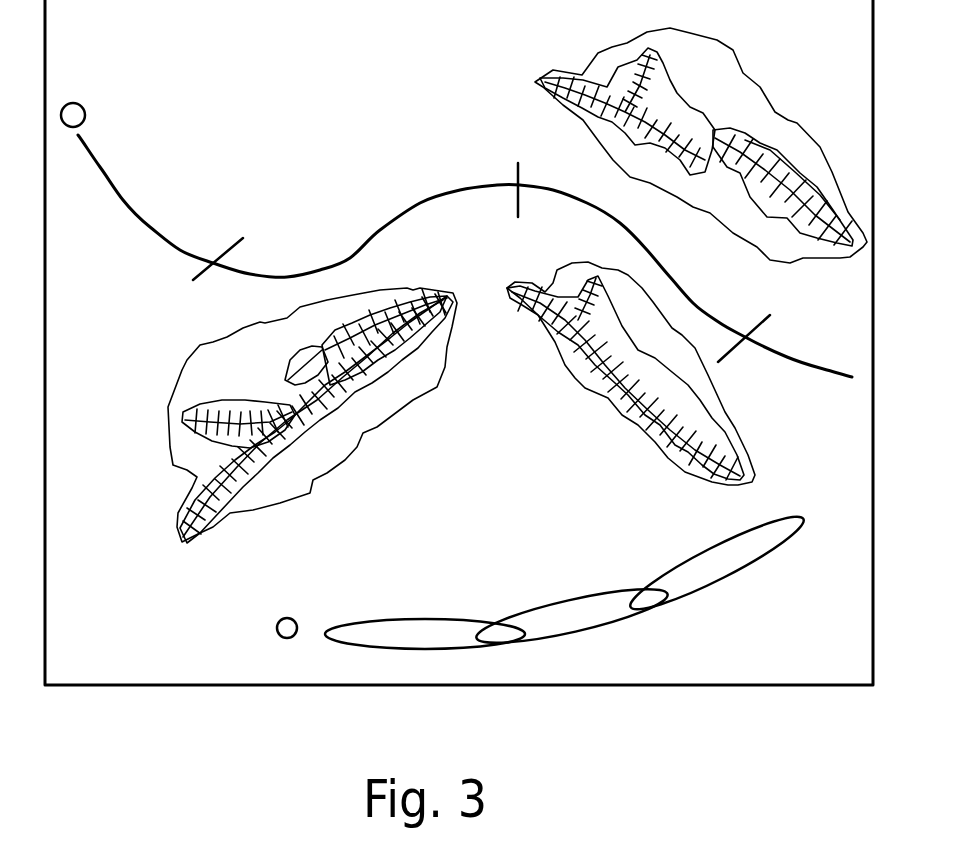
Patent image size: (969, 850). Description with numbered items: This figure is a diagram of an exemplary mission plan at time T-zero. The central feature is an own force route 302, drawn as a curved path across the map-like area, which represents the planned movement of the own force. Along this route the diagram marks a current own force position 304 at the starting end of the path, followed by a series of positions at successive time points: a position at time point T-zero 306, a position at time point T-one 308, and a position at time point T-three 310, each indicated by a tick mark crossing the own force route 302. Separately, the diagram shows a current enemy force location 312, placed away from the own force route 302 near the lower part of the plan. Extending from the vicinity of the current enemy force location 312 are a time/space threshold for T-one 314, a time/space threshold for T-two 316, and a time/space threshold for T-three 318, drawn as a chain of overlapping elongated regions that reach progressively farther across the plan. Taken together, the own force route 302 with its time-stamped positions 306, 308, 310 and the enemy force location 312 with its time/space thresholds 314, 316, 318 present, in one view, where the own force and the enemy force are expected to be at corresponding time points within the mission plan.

The own force route 302 is at (152, 187).
The current own force position 304 is at (100, 109).
The position at time point T0 306 is at (227, 243).
The position at time point T1 308 is at (523, 174).
The position at time point T3 310 is at (752, 322).
The current enemy force location 312 is at (293, 607).
The time/space threshold for T1 314 is at (415, 615).
The time/space threshold for T2 316 is at (553, 598).
The time/space threshold for T3 318 is at (697, 542).